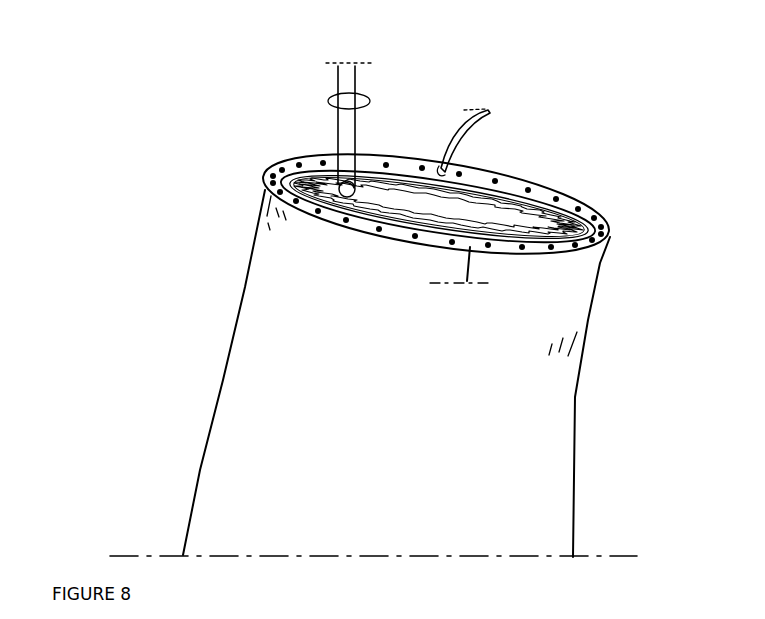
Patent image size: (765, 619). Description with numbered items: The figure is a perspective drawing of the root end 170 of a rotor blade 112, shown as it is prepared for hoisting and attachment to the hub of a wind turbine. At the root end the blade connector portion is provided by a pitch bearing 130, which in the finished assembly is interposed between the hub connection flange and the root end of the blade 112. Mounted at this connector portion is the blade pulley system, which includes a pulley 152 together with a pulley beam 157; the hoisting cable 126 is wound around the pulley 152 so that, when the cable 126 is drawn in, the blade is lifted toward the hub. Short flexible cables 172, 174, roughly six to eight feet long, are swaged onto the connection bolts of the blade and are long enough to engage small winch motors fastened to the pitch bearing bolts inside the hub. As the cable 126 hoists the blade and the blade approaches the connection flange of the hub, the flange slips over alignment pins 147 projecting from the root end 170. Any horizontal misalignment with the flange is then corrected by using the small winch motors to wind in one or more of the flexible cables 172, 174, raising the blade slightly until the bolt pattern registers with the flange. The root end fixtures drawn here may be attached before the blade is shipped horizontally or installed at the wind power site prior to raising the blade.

The rotor blade 112 is at (268, 287).
The cable 126 is at (329, 102).
The pitch bearing 130 is at (447, 188).
The alignment pins 147 is at (272, 194).
The pulley 152 is at (372, 166).
The mesh liner 157 is at (470, 213).
The root end 170 is at (244, 170).
The flexible cable 172 is at (490, 114).
The flexible cable 174 is at (477, 270).